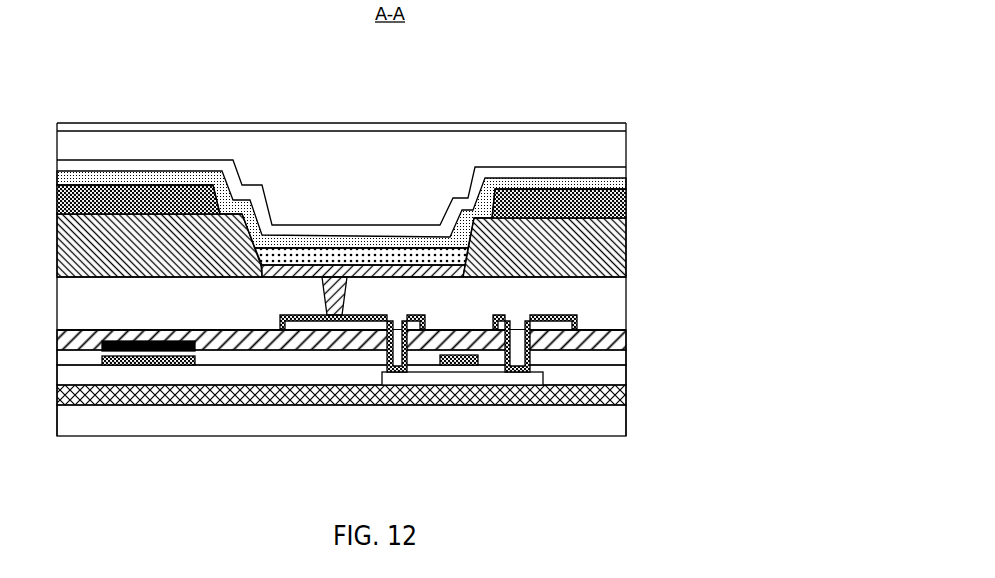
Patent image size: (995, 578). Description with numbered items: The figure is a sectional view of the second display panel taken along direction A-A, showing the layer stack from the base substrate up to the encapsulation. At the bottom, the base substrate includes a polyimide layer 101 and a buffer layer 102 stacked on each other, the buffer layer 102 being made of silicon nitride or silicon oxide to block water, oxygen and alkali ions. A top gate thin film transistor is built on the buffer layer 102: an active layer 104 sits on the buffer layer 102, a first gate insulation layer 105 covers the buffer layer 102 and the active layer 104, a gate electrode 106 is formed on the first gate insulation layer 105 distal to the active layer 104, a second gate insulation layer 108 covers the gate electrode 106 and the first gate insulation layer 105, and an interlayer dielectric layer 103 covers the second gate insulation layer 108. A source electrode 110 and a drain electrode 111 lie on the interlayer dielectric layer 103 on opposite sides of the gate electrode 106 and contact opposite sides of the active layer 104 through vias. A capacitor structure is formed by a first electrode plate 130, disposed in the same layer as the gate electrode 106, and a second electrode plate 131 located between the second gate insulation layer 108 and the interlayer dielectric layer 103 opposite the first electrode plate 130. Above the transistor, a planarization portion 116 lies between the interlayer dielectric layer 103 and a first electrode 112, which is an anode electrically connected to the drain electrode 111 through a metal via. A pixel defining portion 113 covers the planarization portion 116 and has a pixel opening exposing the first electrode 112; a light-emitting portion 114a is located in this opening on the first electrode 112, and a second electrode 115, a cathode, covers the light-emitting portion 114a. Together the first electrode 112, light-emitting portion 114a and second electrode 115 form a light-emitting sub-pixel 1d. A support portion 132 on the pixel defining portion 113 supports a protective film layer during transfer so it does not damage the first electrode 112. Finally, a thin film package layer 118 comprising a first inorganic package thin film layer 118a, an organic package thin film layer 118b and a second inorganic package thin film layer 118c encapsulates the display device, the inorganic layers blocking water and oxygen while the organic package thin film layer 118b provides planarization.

The polyimide layer 101 is at (636, 420).
The buffer layer 102 is at (636, 397).
The interlayer dielectric layer 103 is at (636, 338).
The active layer 104 is at (478, 392).
The first gate insulation layer 105 is at (636, 377).
The gate electrode 106 is at (446, 375).
The second gate insulation layer 108 is at (636, 358).
The source electrode 110 is at (547, 332).
The drain electrode 111 is at (362, 334).
The first electrode 112 is at (422, 262).
The pixel defining portion 113 is at (636, 255).
The light-emitting portion 114a is at (361, 249).
The second electrode 115 is at (303, 235).
The planarization portion 116 is at (636, 306).
The thin film package layer 118 is at (410, 182).
The first inorganic package thin film layer 118a is at (636, 171).
The organic package thin film layer 118b is at (636, 150).
The second inorganic package thin film layer 118c is at (636, 127).
The first electrode plate 130 is at (117, 376).
The second electrode plate 131 is at (178, 360).
The support portion 132 is at (636, 202).
The light-emitting sub-pixel 1d is at (415, 63).